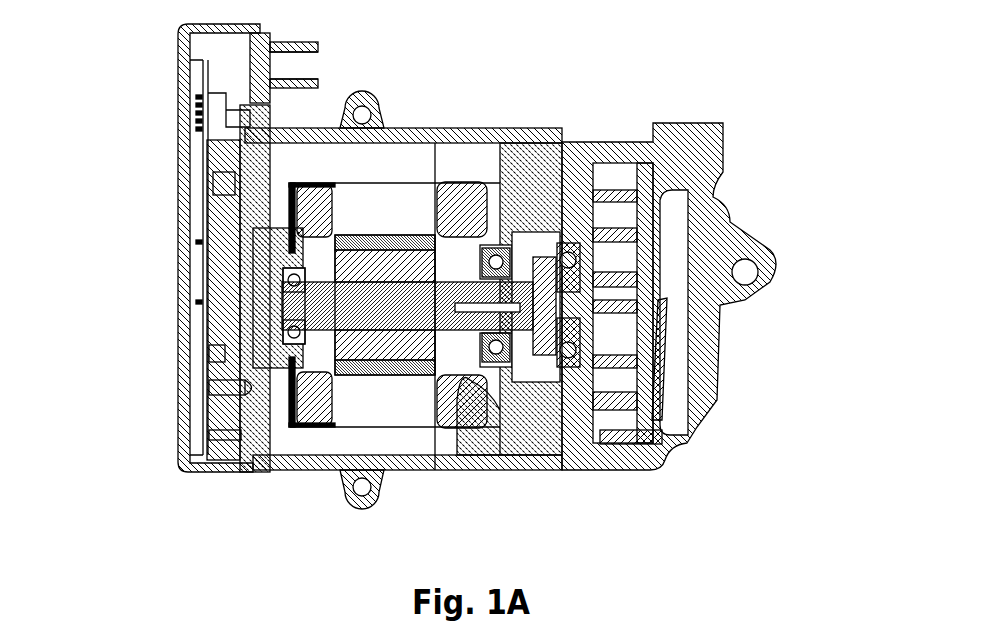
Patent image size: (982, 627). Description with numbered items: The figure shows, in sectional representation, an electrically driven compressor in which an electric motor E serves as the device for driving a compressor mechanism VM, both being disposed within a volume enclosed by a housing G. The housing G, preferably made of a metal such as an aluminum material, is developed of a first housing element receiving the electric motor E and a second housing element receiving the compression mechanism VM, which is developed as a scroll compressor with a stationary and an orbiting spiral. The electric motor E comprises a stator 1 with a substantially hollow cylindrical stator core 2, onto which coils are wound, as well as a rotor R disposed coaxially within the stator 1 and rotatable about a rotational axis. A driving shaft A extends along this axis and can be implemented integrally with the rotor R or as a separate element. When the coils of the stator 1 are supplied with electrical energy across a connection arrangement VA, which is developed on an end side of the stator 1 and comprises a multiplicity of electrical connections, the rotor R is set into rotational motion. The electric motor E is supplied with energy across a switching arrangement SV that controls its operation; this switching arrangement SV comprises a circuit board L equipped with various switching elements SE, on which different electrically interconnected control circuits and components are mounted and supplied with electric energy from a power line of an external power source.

The electric motor E is at (378, 162).
The housing G is at (432, 122).
The compressor mechanism VM is at (596, 155).
The connection arrangement VA is at (215, 178).
The switching element SE is at (175, 346).
The switching arrangement SV is at (150, 407).
The circuit board L is at (178, 388).
The driving shaft A is at (357, 310).
The rotor R is at (380, 343).
The stator 1 is at (478, 400).
The stator core 2 is at (496, 305).